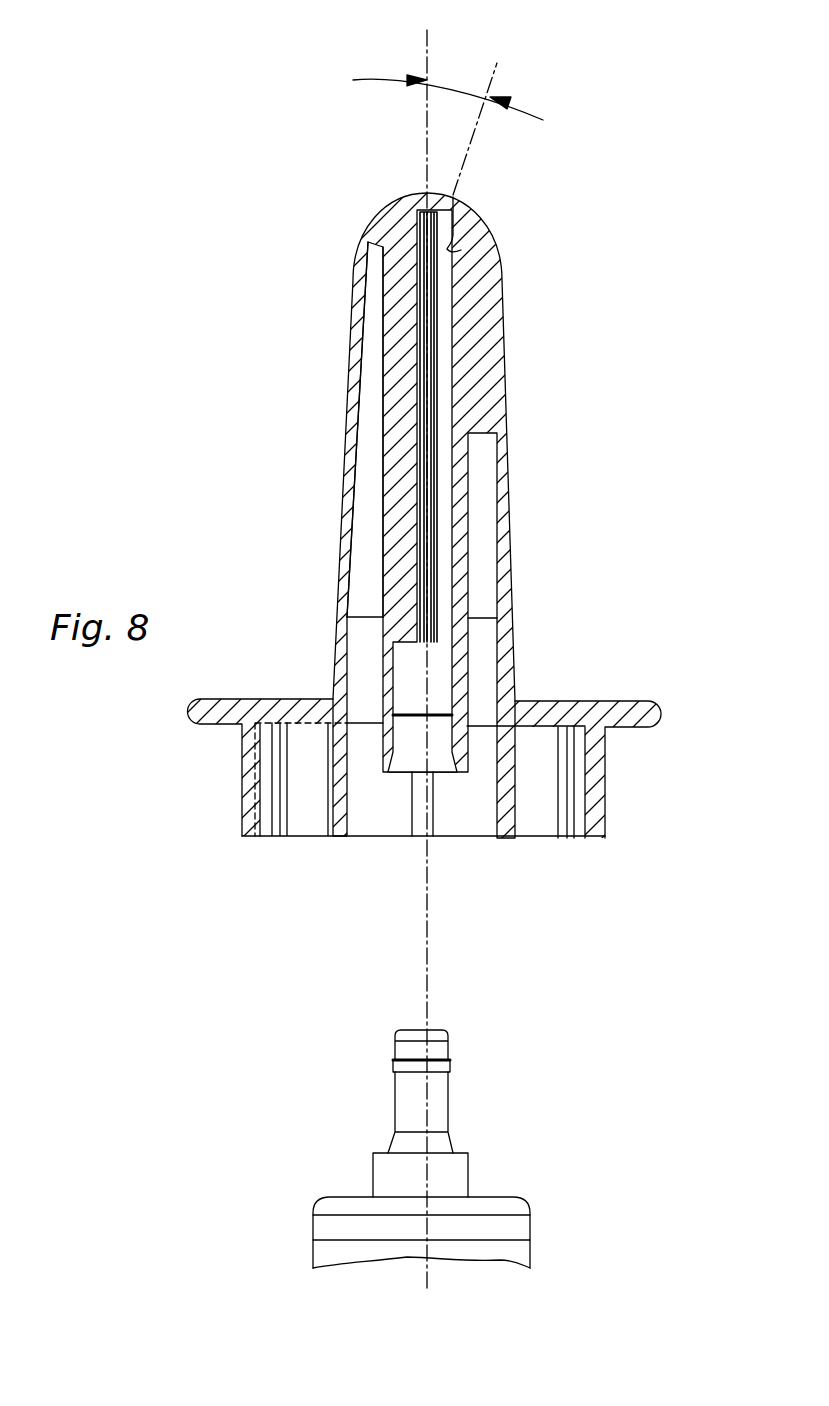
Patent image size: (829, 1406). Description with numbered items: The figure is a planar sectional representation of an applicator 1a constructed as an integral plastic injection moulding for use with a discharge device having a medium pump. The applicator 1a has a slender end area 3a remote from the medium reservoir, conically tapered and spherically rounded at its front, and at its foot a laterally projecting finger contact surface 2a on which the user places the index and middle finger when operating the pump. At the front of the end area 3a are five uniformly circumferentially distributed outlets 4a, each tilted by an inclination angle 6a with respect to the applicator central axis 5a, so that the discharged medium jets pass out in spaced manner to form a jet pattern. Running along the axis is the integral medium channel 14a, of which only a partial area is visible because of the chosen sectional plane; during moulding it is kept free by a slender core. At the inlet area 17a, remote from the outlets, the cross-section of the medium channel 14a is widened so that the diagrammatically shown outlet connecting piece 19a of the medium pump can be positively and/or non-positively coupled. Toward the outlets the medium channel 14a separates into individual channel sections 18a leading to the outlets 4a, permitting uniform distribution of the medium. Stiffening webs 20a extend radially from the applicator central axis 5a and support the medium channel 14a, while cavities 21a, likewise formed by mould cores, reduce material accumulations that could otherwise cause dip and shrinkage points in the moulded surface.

The applicator 1a is at (605, 423).
The finger contact surface 2a is at (594, 702).
The end area 3a is at (357, 322).
The outlet 4a is at (460, 196).
The applicator central axis 5a is at (430, 918).
The inclination angle 6a is at (457, 82).
The medium channel 14a is at (444, 343).
The inlet area 17a is at (415, 731).
The channel section 18a is at (455, 250).
The outlet connecting piece 19a is at (452, 1173).
The stiffening web 20a is at (478, 410).
The cavity 21a is at (373, 417).